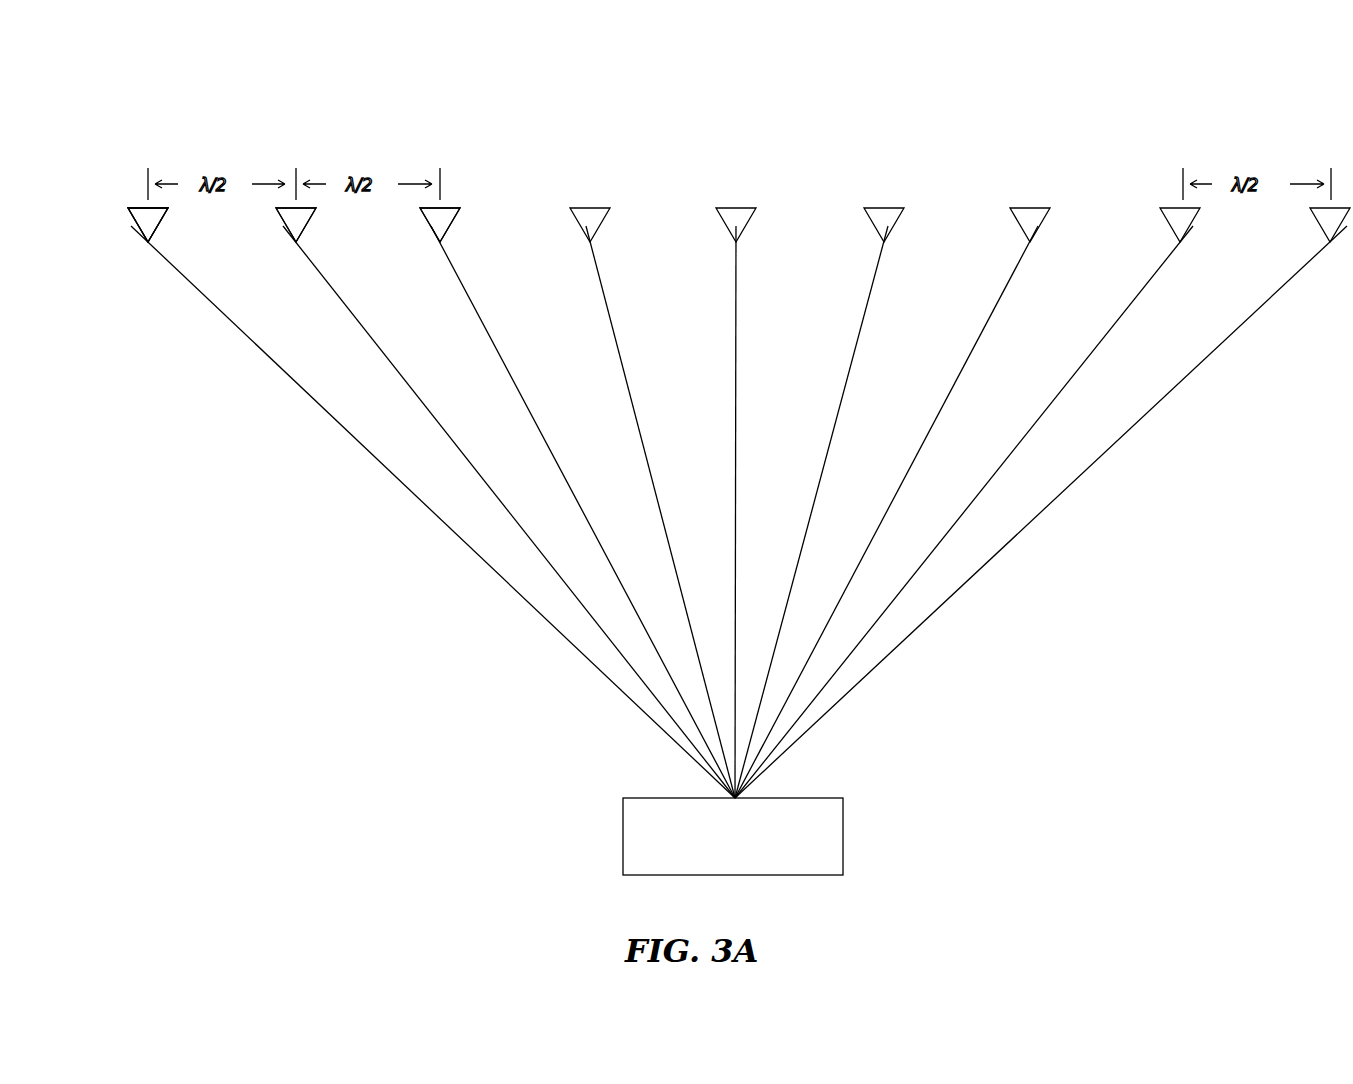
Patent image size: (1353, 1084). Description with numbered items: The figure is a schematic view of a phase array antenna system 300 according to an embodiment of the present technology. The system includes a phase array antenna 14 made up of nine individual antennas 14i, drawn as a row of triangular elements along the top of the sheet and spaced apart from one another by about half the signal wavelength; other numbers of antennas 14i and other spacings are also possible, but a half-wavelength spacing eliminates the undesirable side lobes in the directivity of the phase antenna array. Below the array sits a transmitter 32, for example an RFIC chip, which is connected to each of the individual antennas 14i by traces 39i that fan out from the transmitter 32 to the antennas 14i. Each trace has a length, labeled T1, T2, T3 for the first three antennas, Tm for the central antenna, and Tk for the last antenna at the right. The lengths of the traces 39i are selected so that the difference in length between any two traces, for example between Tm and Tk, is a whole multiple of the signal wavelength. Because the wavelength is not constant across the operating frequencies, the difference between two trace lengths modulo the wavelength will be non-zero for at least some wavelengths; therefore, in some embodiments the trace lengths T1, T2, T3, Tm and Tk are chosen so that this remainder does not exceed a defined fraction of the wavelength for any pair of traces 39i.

The phase array antenna system 300 is at (1270, 99).
The phase array antenna 14 is at (104, 221).
The antennas 14i is at (141, 224).
The trace length T1 is at (328, 412).
The trace length T2 is at (362, 328).
The trace length T3 is at (480, 320).
The trace length Tm is at (735, 368).
The trace length Tk is at (1140, 420).
The traces 39i is at (604, 550).
The transmitter 32 is at (845, 824).